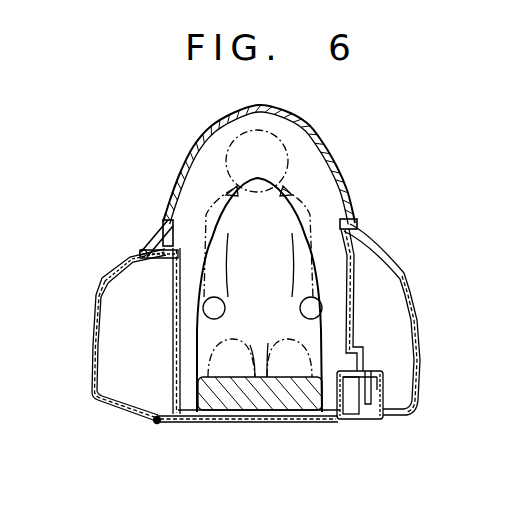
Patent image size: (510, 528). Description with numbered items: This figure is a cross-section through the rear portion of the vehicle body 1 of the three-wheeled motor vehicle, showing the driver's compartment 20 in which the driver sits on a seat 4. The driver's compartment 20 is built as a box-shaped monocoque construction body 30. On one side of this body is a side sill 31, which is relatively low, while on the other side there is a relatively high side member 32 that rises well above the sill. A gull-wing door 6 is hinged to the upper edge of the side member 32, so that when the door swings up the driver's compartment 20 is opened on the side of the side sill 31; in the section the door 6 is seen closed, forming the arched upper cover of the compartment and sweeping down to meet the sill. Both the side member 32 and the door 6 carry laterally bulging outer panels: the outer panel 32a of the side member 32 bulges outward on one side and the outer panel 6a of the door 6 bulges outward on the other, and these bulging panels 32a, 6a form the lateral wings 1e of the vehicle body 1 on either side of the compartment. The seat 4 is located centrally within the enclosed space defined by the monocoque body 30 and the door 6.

The vehicle body 1 is at (147, 208).
The lateral wings 1e is at (92, 344).
The driver's compartment 20 is at (315, 162).
The gull-wing door 6 is at (355, 207).
The outer panel of the door 6a is at (402, 275).
The monocoque construction body 30 is at (115, 254).
The side member 32 is at (96, 296).
The outer panel of the side member 32a is at (106, 276).
The seat 4 is at (264, 396).
The side sill 31 is at (363, 424).